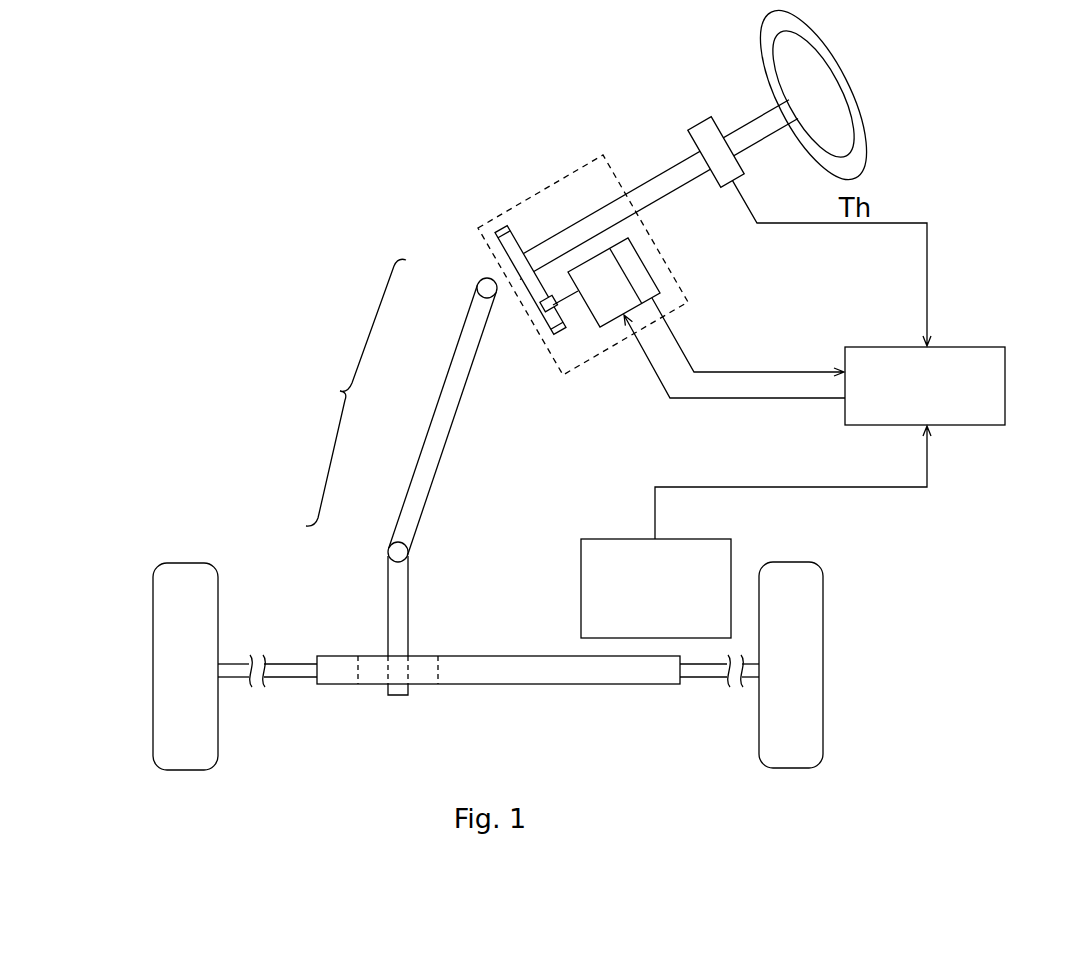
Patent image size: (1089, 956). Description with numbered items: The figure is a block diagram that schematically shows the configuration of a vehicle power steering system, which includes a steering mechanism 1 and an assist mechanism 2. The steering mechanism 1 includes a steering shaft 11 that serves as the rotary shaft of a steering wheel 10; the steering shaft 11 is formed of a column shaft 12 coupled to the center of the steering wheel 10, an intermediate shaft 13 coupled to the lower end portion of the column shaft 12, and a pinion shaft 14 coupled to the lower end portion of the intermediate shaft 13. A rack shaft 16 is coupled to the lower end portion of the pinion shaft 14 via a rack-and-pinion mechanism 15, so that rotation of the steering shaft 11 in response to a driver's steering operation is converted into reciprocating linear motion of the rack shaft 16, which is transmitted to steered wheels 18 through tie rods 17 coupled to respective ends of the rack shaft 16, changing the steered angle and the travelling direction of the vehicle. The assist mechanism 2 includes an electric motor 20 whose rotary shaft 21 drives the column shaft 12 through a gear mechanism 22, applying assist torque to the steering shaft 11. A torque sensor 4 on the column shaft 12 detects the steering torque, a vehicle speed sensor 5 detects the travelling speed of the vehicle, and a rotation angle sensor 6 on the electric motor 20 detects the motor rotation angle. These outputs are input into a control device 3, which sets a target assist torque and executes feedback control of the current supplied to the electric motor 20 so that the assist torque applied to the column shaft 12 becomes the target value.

The steering mechanism 1 is at (345, 261).
The assist mechanism 2 is at (540, 191).
The control device 3 is at (1005, 383).
The torque sensor 4 is at (697, 124).
The vehicle speed sensor 5 is at (592, 538).
The rotation angle sensor 6 is at (641, 257).
The steering wheel 10 is at (848, 85).
The steering shaft 11 is at (352, 392).
The column shaft 12 is at (482, 271).
The intermediate shaft 13 is at (435, 410).
The pinion shaft 14 is at (388, 576).
The rack-and-pinion mechanism 15 is at (438, 668).
The rack shaft 16 is at (587, 685).
The tie rods 17 is at (290, 680).
The steered wheels 18 is at (183, 770).
The electric motor 20 is at (613, 320).
The rotary shaft 21 is at (556, 312).
The gear mechanism 22 is at (556, 334).